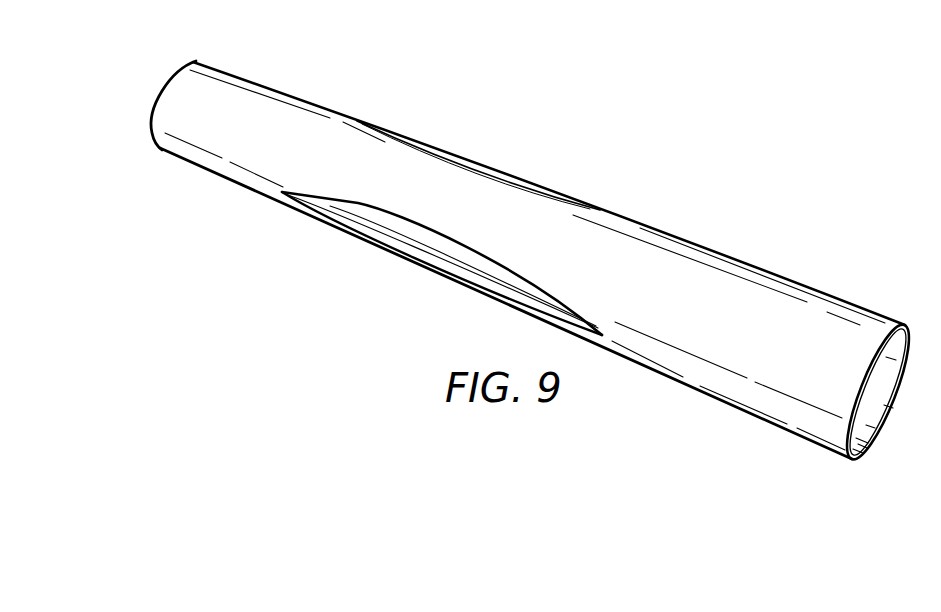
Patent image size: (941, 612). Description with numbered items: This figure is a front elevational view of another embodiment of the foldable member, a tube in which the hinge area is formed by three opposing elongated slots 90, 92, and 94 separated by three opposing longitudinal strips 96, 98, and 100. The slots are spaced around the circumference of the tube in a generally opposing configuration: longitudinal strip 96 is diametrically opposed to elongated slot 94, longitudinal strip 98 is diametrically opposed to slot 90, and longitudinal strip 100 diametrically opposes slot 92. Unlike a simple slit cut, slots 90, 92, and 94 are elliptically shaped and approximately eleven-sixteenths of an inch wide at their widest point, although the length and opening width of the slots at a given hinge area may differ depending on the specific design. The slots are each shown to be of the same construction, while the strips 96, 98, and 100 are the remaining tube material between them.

The elongated slot 90 is at (434, 266).
The elongated slot 92 is at (488, 177).
The elongated slot 94 is at (483, 260).
The longitudinal strip 96 is at (400, 182).
The longitudinal strip 98 is at (538, 188).
The longitudinal strip 100 is at (355, 236).